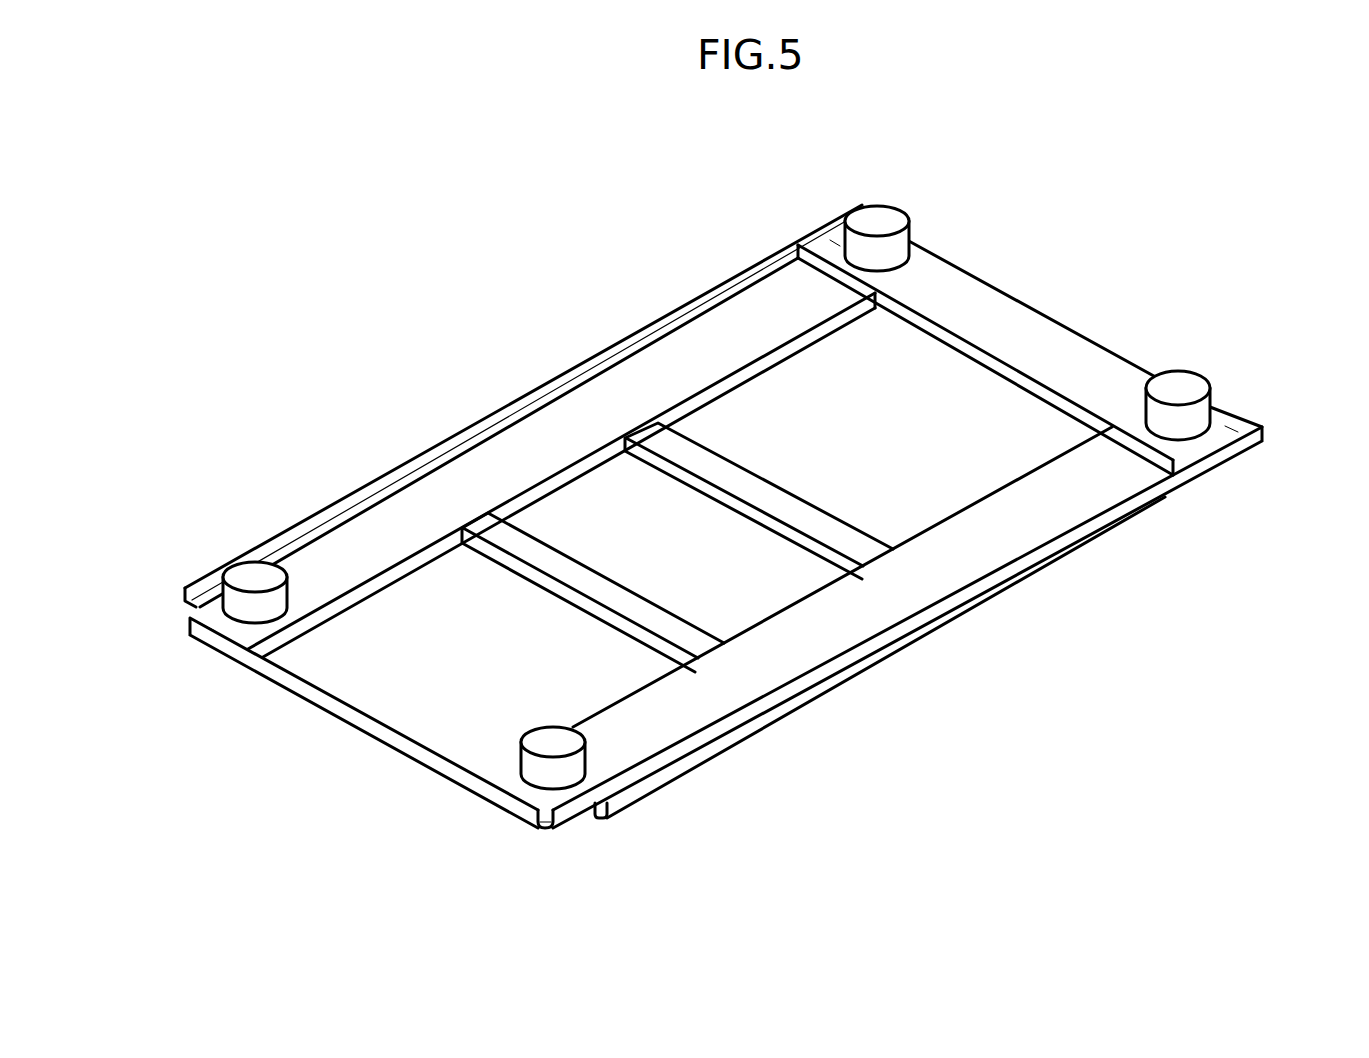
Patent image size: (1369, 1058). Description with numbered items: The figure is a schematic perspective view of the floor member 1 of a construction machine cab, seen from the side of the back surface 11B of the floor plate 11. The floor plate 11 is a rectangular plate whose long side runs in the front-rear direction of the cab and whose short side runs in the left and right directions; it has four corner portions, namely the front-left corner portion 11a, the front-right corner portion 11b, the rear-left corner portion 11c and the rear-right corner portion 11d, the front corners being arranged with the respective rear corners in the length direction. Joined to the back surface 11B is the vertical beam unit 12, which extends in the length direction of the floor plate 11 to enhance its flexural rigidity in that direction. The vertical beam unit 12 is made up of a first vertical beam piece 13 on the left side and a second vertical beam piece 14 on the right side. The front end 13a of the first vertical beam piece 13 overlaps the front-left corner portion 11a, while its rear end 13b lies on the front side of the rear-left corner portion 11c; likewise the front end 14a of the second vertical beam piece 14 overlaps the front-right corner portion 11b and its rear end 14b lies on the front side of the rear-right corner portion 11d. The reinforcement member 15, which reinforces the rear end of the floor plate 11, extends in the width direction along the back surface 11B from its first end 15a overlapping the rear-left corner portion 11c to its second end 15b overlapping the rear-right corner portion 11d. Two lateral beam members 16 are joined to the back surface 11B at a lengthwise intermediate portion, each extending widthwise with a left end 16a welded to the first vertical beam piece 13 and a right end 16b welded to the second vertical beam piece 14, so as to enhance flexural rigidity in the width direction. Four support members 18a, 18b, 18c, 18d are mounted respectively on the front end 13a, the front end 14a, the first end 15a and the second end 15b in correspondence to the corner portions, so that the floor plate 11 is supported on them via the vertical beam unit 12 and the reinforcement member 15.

The floor member 1 is at (1120, 201).
The floor plate 11 is at (460, 722).
The back surface 11B is at (427, 667).
The front-left corner portion 11a is at (240, 630).
The front-right corner portion 11b is at (518, 826).
The rear-left corner portion 11c is at (835, 243).
The rear-right corner portion 11d is at (1232, 430).
The vertical beam unit 12 is at (600, 402).
The first vertical beam piece 13 is at (680, 350).
The front end 13a is at (210, 616).
The rear end 13b is at (823, 278).
The second vertical beam piece 14 is at (1015, 510).
The front end 14a is at (517, 785).
The rear end 14b is at (1137, 452).
The reinforcement member 15 is at (1020, 318).
The first end 15a is at (827, 245).
The second end 15b is at (1220, 421).
The lateral beam member 16 is at (875, 543).
The left end 16a is at (488, 525).
The right end 16b is at (857, 548).
The support member 18a is at (258, 575).
The support member 18b is at (573, 738).
The support member 18c is at (885, 219).
The support member 18d is at (1182, 388).